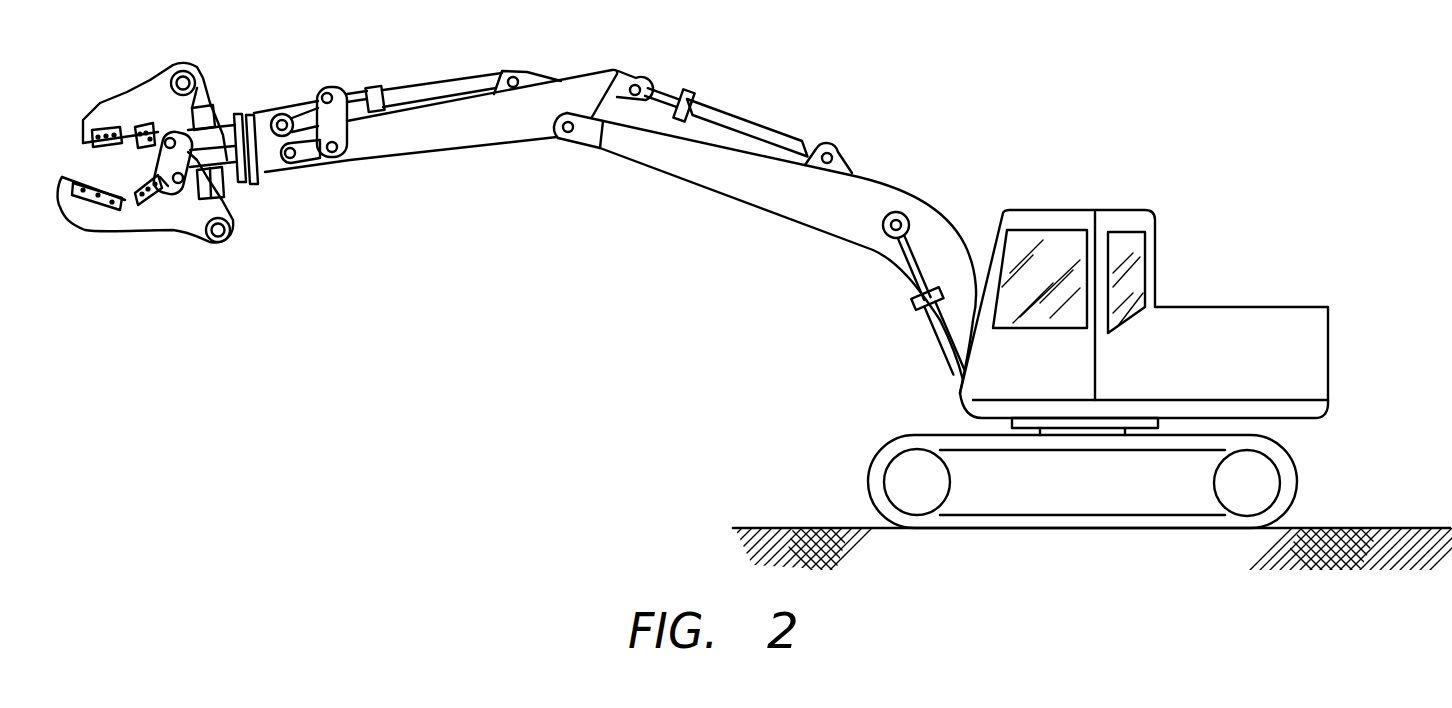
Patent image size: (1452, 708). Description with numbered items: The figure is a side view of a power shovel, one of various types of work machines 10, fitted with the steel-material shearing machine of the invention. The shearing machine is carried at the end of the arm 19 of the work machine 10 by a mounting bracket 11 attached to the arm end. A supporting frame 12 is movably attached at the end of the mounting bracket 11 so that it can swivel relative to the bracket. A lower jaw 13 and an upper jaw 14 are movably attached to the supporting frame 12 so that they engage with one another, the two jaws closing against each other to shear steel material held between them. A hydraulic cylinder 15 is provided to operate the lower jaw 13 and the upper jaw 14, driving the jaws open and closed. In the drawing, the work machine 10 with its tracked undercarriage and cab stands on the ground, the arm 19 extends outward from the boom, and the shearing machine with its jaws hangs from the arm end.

The work machine 10 is at (1243, 330).
The mounting bracket 11 is at (262, 100).
The supporting frame 12 is at (221, 116).
The lower jaw 13 is at (101, 222).
The upper jaw 14 is at (125, 103).
The hydraulic cylinder 15 is at (237, 187).
The arm 19 is at (403, 140).